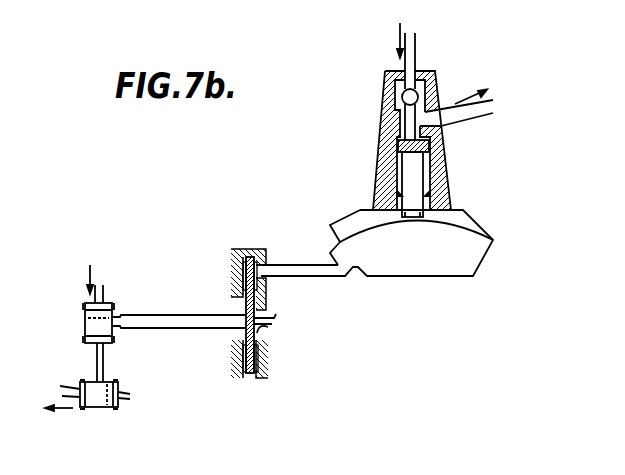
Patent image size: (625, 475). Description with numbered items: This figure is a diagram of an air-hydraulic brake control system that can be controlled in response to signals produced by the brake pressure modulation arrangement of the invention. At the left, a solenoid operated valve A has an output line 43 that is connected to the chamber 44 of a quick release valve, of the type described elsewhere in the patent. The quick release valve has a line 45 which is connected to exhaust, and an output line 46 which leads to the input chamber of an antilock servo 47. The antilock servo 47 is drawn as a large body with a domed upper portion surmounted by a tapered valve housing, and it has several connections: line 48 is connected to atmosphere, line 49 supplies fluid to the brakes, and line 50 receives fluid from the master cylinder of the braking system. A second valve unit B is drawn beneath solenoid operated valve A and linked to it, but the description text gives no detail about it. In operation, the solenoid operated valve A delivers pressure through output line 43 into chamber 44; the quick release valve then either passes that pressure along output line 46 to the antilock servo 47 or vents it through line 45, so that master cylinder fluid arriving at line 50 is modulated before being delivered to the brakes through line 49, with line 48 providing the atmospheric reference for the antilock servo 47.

The output line 43 is at (153, 315).
The chamber 44 is at (245, 306).
The line 45 is at (268, 332).
The output line 46 is at (300, 265).
The antilock servo 47 is at (484, 231).
The line 48 is at (357, 211).
The line 49 is at (457, 122).
The line 50 is at (417, 53).
The solenoid operated valve A is at (85, 318).
The cylinder B is at (103, 408).